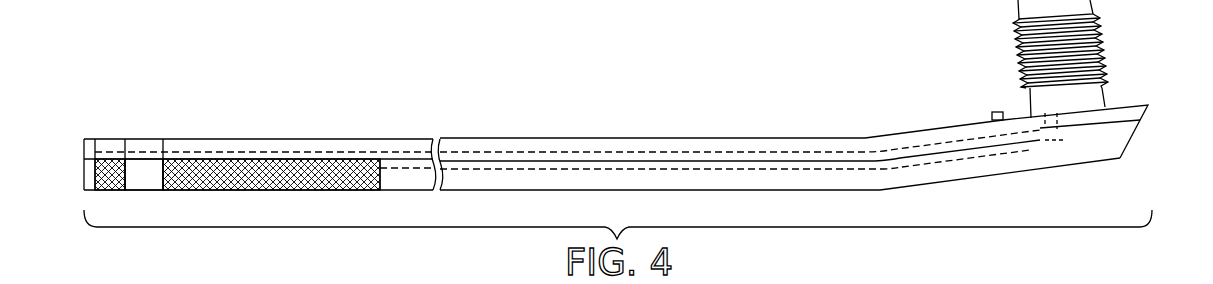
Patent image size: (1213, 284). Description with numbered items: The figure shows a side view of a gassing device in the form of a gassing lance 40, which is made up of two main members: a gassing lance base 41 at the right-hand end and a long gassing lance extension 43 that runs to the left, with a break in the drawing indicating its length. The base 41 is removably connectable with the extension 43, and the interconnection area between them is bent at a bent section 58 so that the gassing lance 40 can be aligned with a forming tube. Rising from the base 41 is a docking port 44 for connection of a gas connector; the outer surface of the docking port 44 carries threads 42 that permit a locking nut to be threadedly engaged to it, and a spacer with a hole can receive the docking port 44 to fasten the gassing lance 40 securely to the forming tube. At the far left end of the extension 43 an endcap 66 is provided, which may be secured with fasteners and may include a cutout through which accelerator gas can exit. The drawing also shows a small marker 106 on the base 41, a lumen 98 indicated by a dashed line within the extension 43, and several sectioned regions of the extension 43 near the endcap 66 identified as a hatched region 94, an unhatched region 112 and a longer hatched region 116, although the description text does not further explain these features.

The gassing lance 40 is at (387, 117).
The gassing lance base 41 is at (1013, 117).
The threads 42 is at (1103, 43).
The gassing lance extension 43 is at (522, 137).
The docking port 44 is at (1092, 2).
The bent section 58 is at (864, 136).
The endcap 66 is at (89, 146).
The distal braided section 94 is at (103, 190).
The lumen 98 is at (725, 169).
The marker 106 is at (989, 115).
The unreinforced section 112 is at (155, 190).
The braided reinforcement section 116 is at (328, 190).